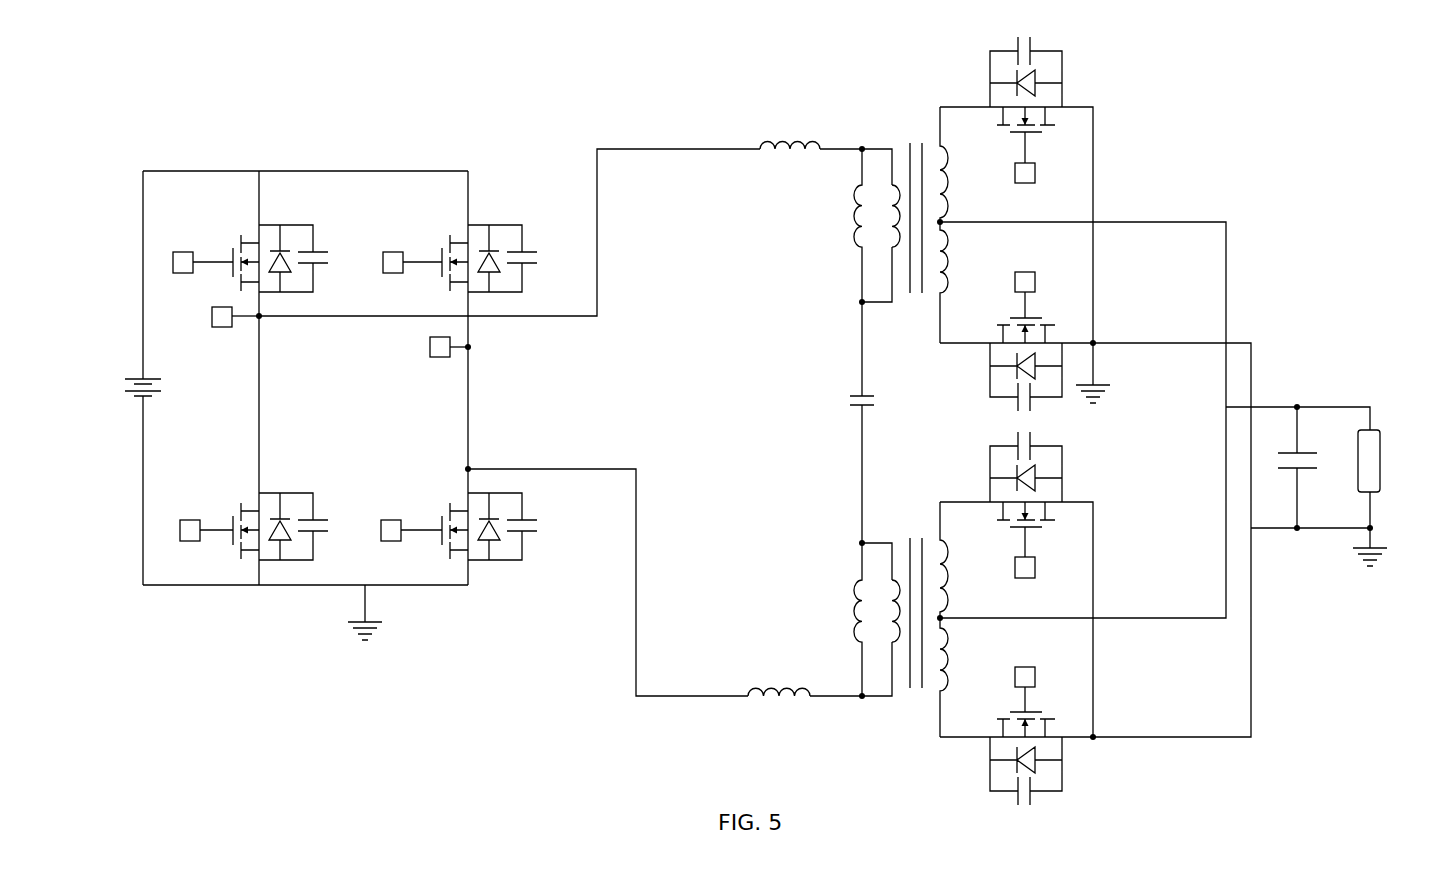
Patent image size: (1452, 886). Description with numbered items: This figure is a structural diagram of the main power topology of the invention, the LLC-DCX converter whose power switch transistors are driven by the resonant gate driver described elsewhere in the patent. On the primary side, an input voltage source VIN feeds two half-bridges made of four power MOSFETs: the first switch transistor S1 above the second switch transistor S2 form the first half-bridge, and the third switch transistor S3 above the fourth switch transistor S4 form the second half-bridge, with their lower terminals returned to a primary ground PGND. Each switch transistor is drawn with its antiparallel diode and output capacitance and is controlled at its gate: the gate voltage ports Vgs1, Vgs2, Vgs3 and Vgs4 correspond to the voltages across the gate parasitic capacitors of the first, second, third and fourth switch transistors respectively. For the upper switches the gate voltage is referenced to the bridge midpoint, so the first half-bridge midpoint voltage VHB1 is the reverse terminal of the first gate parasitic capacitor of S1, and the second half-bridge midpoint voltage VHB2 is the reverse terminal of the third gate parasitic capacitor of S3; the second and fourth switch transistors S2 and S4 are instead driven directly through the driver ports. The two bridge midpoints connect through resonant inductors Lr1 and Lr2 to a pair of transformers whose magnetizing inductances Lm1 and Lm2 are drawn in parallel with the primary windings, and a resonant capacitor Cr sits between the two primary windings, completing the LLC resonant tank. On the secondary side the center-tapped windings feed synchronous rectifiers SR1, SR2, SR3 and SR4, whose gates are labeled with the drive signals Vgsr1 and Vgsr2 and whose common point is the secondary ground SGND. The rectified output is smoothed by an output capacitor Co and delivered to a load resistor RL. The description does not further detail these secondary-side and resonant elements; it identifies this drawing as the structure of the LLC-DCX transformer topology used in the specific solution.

The input voltage source VIN is at (111, 378).
The first switch transistor S1 is at (276, 250).
The second switch transistor S2 is at (267, 523).
The third switch transistor S3 is at (477, 256).
The fourth switch transistor S4 is at (473, 523).
The gate voltage port of first switch transistor Vgs1 is at (195, 275).
The gate voltage port of second switch transistor Vgs2 is at (196, 543).
The gate voltage port of third switch transistor Vgs3 is at (393, 275).
The gate voltage port of fourth switch transistor Vgs4 is at (394, 543).
The first half-bridge voltage VHB1 is at (221, 332).
The second half-bridge voltage VHB2 is at (412, 347).
The primary ground PGND is at (401, 618).
The resonant inductor 1 Lr1 is at (790, 127).
The resonant inductor 2 Lr2 is at (779, 678).
The magnetizing inductor 1 Lm1 is at (837, 225).
The magnetizing inductor 2 Lm2 is at (840, 619).
The resonant capacitor Cr is at (847, 422).
The synchronous rectifier SR1 is at (1037, 103).
The synchronous rectifier SR2 is at (1017, 355).
The synchronous rectifier SR3 is at (1037, 498).
The synchronous rectifier SR4 is at (1017, 748).
The gate drive signal of SR1/SR3 Vgsr1 is at (1040, 369).
The gate drive signal of SR2/SR4 Vgsr2 is at (1040, 478).
The secondary ground SGND is at (1122, 377).
The output capacitor Co is at (1302, 467).
The load resistor RL is at (1393, 498).